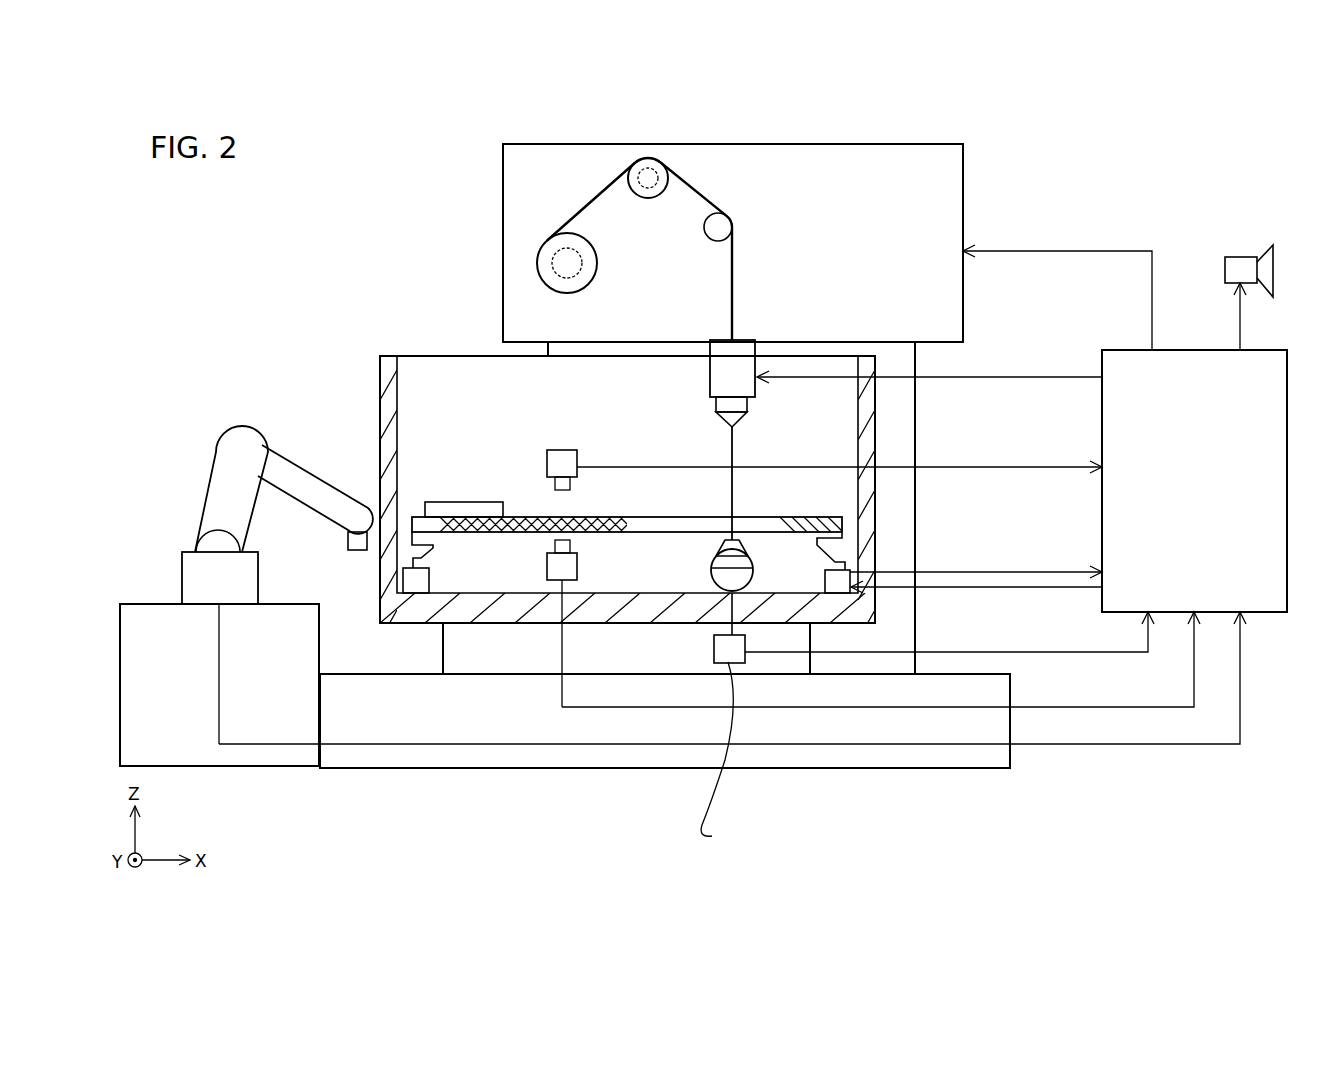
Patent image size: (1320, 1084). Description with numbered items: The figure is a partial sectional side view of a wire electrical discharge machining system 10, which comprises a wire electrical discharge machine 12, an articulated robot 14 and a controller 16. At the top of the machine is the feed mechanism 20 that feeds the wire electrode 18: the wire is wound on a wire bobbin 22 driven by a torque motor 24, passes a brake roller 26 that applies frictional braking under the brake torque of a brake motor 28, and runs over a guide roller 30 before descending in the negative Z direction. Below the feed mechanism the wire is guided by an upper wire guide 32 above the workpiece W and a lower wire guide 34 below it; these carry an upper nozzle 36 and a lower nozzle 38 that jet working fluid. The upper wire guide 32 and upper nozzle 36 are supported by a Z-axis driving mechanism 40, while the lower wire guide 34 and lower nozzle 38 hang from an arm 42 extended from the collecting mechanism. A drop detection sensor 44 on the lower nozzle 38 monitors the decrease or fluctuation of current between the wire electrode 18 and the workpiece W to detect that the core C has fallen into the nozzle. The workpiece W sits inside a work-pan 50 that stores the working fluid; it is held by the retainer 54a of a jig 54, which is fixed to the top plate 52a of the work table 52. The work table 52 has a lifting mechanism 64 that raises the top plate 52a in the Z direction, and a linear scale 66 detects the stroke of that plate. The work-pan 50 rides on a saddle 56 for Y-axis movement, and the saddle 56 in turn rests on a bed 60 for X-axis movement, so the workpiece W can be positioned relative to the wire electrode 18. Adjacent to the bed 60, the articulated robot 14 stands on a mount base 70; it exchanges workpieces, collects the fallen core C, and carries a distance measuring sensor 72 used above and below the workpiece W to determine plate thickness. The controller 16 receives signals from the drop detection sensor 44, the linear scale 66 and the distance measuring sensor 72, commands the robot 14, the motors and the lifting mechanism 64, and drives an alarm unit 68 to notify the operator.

The wire electrical discharge machining system 10 is at (286, 228).
The wire electrical discharge machine 12 is at (987, 172).
The articulated robot 14 is at (249, 422).
The controller 16 is at (1180, 350).
The wire electrode 18 is at (736, 446).
The feed mechanism 20 is at (752, 246).
The wire bobbin 22 is at (596, 270).
The torque motor 24 is at (567, 290).
The brake roller 26 is at (655, 198).
The brake motor 28 is at (641, 198).
The guide roller 30 is at (716, 241).
The upper wire guide 32 is at (748, 402).
The lower wire guide 34 is at (750, 562).
The upper nozzle 36 is at (722, 420).
The lower nozzle 38 is at (716, 548).
The Z-axis driving mechanism 40 is at (710, 378).
The arm 42 is at (722, 574).
The drop detection sensor 44 is at (714, 652).
The work-pan 50 is at (870, 423).
The work table 52 is at (457, 540).
The top plate 52a is at (418, 517).
The jig 54 is at (456, 500).
The retainer 54a is at (511, 517).
The saddle 56 is at (441, 647).
The bed 60 is at (341, 684).
The lifting mechanism 64 is at (824, 580).
The linear scale 66 is at (846, 563).
The alarm unit 68 is at (1240, 257).
The mount base 70 is at (158, 610).
The distance measuring sensor 72 is at (562, 450).
The core C is at (575, 517).
The workpiece W is at (610, 517).